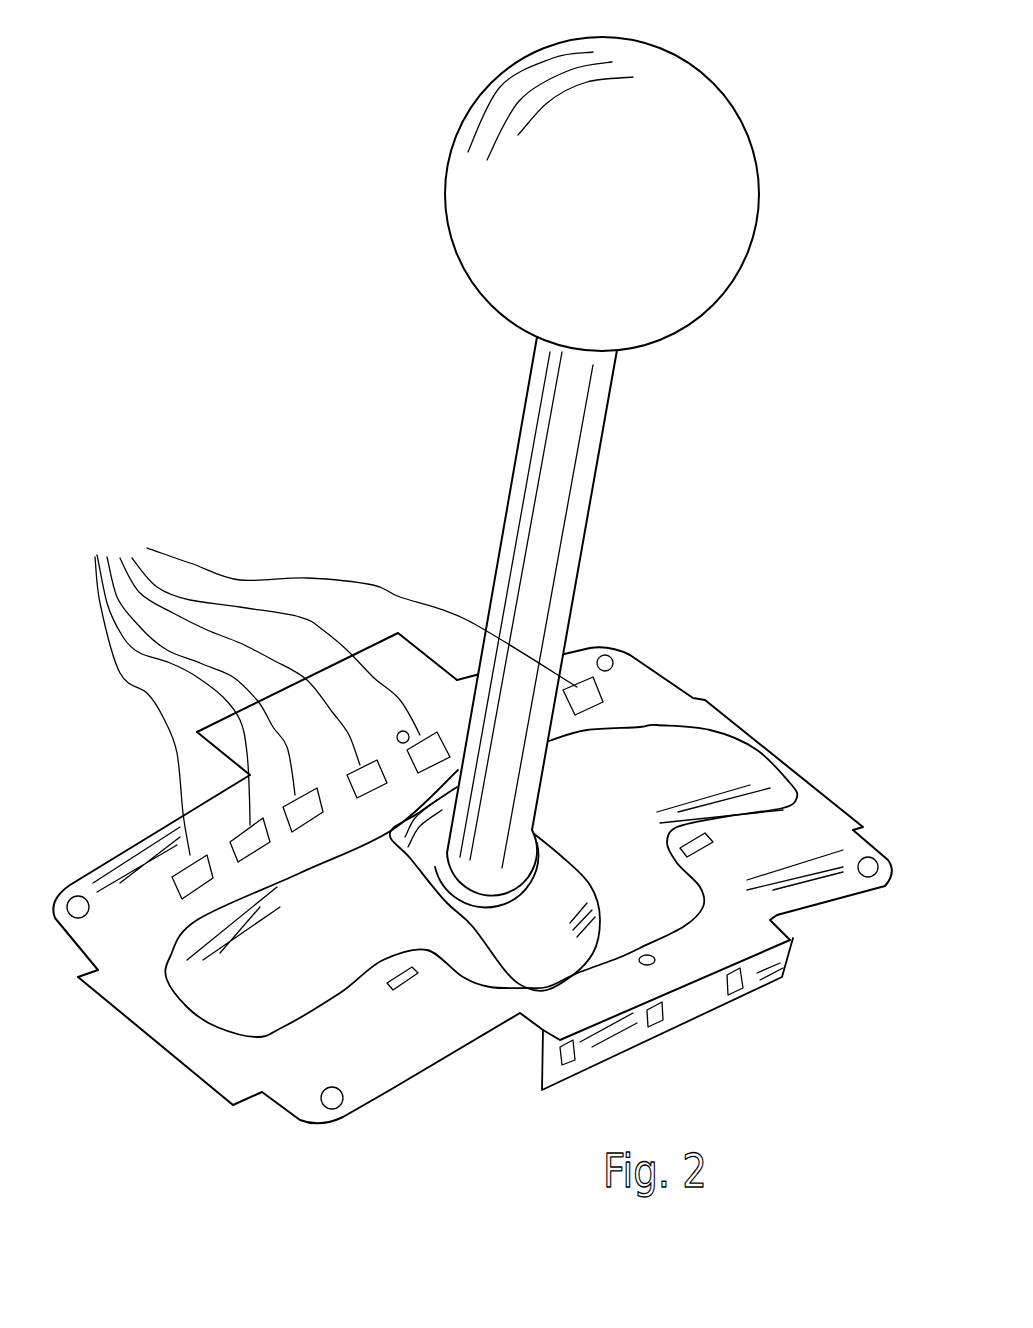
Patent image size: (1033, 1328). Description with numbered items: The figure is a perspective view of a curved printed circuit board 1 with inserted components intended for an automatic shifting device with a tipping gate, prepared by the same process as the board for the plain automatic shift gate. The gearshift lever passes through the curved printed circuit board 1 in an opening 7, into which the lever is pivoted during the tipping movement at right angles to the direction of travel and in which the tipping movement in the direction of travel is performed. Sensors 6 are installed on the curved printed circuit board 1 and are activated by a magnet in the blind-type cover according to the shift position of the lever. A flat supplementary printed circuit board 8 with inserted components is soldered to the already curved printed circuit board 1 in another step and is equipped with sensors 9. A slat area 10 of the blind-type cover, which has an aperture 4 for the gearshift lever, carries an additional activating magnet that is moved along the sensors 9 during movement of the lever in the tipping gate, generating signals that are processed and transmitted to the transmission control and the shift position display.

The curved printed circuit board 1 is at (823, 830).
The aperture 4 is at (478, 887).
The sensors 6 is at (336, 684).
The opening 7 is at (667, 893).
The supplementary printed circuit board 8 is at (767, 958).
The sensors 9 is at (575, 1053).
The slat area 10 is at (533, 927).